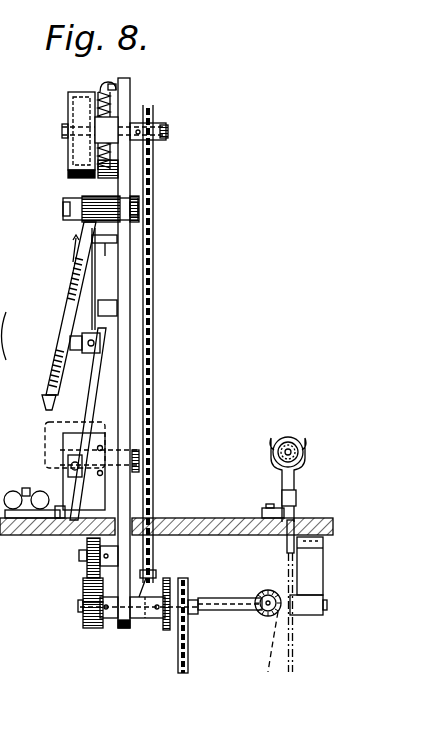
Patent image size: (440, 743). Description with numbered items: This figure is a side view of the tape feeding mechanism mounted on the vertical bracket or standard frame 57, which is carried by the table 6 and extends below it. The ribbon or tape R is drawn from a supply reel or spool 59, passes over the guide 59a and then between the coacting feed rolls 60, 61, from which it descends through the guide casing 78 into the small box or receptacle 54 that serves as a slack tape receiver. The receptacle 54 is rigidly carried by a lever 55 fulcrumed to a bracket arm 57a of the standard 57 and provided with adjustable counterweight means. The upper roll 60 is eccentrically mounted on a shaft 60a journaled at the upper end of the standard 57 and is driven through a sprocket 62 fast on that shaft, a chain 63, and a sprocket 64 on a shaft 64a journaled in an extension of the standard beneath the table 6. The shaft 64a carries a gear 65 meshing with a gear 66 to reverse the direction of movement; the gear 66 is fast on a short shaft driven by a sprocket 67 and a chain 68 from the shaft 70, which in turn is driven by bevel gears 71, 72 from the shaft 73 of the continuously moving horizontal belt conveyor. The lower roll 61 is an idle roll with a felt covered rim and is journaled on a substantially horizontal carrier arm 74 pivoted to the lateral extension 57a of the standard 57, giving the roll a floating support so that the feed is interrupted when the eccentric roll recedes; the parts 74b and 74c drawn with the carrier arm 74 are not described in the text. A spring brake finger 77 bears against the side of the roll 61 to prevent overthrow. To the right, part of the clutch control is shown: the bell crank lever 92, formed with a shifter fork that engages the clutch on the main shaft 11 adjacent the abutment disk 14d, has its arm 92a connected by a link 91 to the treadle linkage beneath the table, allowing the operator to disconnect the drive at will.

The vertical bracket or standard frame 57 is at (126, 383).
The chain 63 is at (153, 300).
The sprocket 62 is at (160, 125).
The feed roll 60 is at (75, 110).
The shaft 60a is at (66, 135).
The screw 74b is at (100, 105).
The spring hook 74c is at (112, 88).
The carrier arm 74 is at (88, 220).
The guide 59a is at (70, 175).
The feed roll 61 is at (70, 200).
The bracket arm 57a is at (134, 219).
The spring brake finger 77 is at (104, 279).
The ribbon or tape R is at (72, 268).
The guide casing 78 is at (70, 407).
The supply reel or spool 59 is at (48, 394).
The box or receptacle 54 is at (55, 444).
The lever 55 is at (68, 466).
The table 6 is at (192, 520).
The gear 65 is at (87, 552).
The shaft 64a is at (85, 566).
The gear 66 is at (88, 612).
The sprocket 64 is at (156, 578).
The sprocket 67 is at (165, 616).
The chain 68 is at (180, 636).
The shaft 70 is at (222, 610).
The bevel gear 72 is at (262, 615).
The bevel gear 71 is at (292, 618).
The link 91 is at (286, 544).
The shaft 73 is at (266, 655).
The main shaft 11 is at (283, 440).
The abutment disk 14d is at (292, 440).
The bell crank lever 92 is at (275, 465).
The arm 92a is at (282, 497).